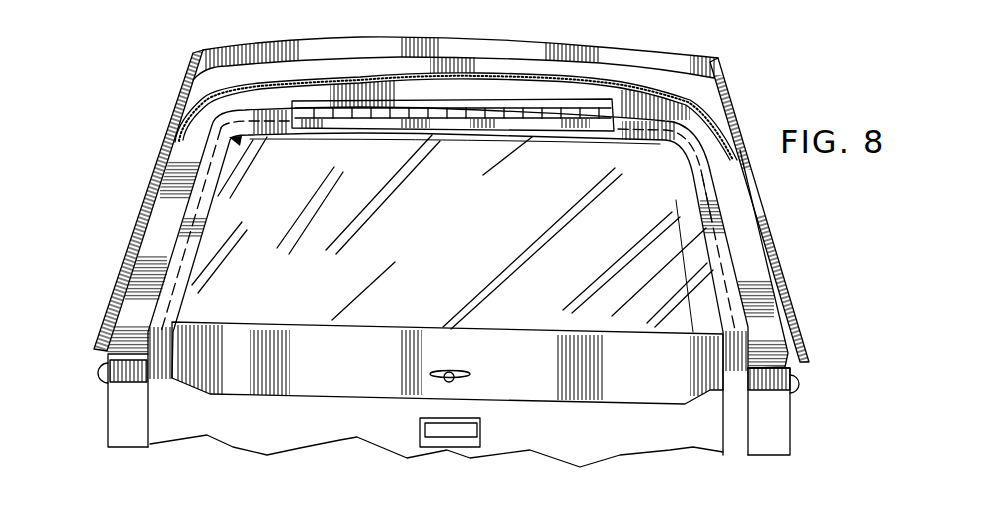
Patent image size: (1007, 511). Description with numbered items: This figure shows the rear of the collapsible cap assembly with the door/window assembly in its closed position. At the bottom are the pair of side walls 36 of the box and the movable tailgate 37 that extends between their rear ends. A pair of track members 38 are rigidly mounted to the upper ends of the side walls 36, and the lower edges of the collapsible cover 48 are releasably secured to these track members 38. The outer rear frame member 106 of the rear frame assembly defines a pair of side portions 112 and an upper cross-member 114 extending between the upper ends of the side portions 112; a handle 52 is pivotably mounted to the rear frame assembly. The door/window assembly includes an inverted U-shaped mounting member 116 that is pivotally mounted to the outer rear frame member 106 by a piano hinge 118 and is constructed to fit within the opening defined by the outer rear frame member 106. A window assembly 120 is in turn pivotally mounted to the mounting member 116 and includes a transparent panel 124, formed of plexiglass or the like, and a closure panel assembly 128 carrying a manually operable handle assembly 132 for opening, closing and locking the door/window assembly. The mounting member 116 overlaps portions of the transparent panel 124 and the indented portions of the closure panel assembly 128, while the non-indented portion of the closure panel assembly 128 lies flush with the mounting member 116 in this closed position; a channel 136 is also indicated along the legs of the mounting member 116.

The side wall 36 is at (105, 408).
The tailgate 37 is at (625, 460).
The track member 38 is at (107, 361).
The collapsible cover 48 is at (702, 98).
The handle 52 is at (714, 54).
The outer rear frame member 106 is at (631, 80).
The side portion 112 is at (154, 230).
The upper cross-member 114 is at (455, 97).
The mounting member 116 is at (198, 163).
The piano hinge 118 is at (421, 98).
The window assembly 120 is at (694, 218).
The transparent panel 124 is at (464, 243).
The closure panel assembly 128 is at (302, 402).
The handle assembly 132 is at (462, 366).
The guide channel 136 is at (197, 215).